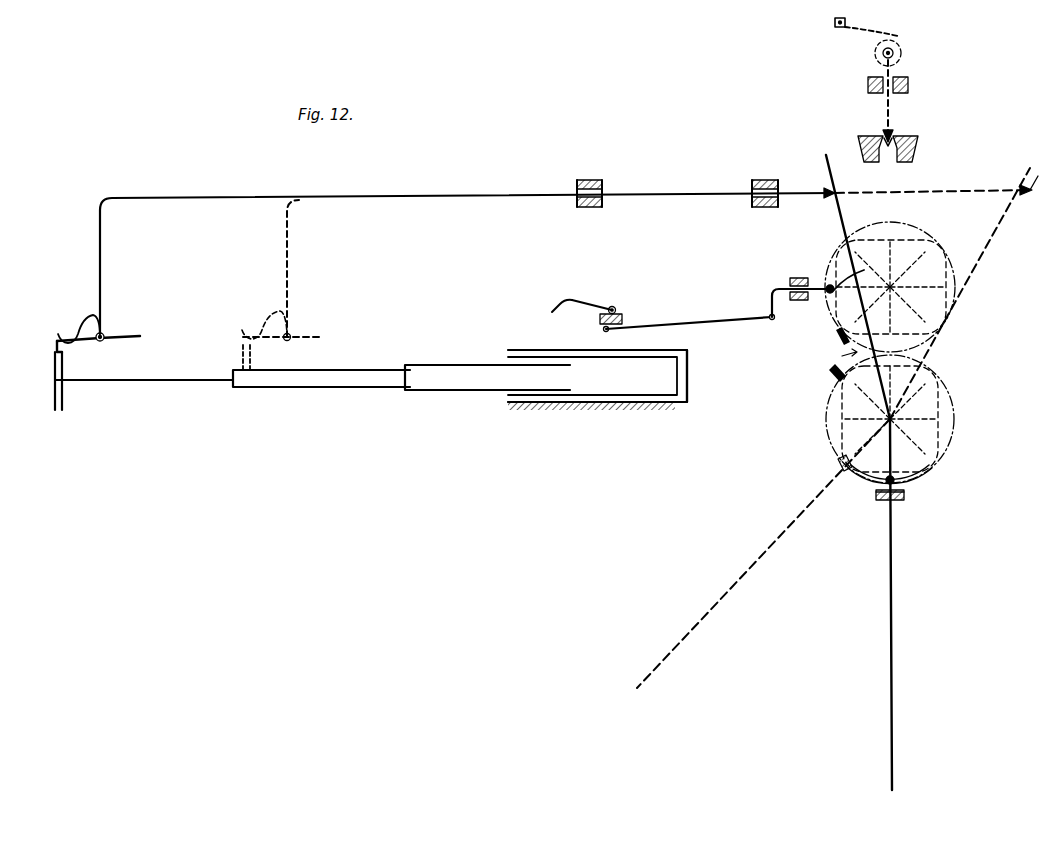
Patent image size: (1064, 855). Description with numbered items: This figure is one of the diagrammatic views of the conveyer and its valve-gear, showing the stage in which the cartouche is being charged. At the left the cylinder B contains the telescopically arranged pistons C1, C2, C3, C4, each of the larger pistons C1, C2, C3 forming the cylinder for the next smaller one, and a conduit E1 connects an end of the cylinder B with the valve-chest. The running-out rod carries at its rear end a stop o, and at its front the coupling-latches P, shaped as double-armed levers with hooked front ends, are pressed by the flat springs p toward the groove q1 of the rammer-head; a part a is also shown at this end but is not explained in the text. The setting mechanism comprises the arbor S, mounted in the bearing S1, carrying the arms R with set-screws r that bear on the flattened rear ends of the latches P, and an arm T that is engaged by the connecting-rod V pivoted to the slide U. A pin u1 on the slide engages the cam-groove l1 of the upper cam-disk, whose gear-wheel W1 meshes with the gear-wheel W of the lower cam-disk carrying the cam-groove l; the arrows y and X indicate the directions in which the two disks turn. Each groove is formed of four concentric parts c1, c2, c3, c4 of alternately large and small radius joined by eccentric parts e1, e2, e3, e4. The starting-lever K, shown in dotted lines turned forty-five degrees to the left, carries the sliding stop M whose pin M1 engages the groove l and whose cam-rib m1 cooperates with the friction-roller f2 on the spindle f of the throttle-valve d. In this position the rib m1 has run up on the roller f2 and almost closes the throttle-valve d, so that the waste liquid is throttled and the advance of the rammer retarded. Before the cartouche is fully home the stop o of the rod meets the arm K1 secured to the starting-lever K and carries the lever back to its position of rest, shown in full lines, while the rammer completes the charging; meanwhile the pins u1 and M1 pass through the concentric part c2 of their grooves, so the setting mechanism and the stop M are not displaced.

The stop o is at (840, 191).
The starting-lever K is at (836, 28).
The arm of the starting-lever K1 is at (844, 210).
The sliding stop M is at (850, 26).
The cam-rib m1 is at (852, 36).
The friction-roller f2 is at (900, 58).
The throttle-valve spindle f is at (890, 100).
The throttle-valve d is at (896, 134).
The conduit E1 is at (898, 154).
The cam-groove l1 is at (914, 246).
The gear-wheel W1 is at (942, 256).
The pin u1 is at (830, 284).
The slide U is at (772, 290).
The connecting-rod V is at (720, 322).
The arrow y is at (834, 334).
The arrow X is at (830, 372).
The gear-wheel W is at (938, 388).
The cam-groove l is at (940, 438).
The pin M1 is at (838, 463).
The set-screws r is at (555, 303).
The arms R is at (582, 299).
The arbor S is at (618, 306).
The bearing S1 is at (624, 318).
The arm T is at (601, 329).
The cylinder B is at (688, 380).
The piston C1 is at (560, 403).
The piston C2 is at (436, 391).
The piston C3 is at (297, 388).
The piston C4 is at (160, 380).
The pin a is at (50, 380).
The groove of the rammer-head q1 is at (58, 410).
The flat springs p is at (78, 333).
The latches P is at (114, 336).
The concentric groove part c1 is at (876, 353).
The concentric groove part c2 is at (863, 379).
The concentric groove part c3 is at (899, 345).
The concentric groove part c4 is at (918, 342).
The eccentric groove part e1 is at (870, 370).
The eccentric groove part e2 is at (890, 359).
The eccentric groove part e3 is at (912, 333).
The eccentric groove part e4 is at (893, 353).